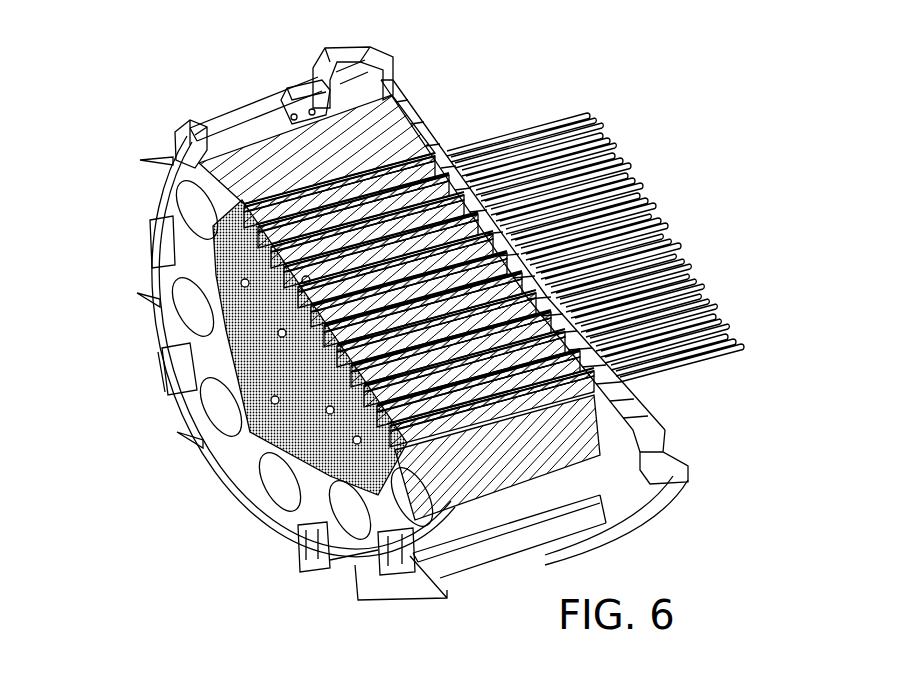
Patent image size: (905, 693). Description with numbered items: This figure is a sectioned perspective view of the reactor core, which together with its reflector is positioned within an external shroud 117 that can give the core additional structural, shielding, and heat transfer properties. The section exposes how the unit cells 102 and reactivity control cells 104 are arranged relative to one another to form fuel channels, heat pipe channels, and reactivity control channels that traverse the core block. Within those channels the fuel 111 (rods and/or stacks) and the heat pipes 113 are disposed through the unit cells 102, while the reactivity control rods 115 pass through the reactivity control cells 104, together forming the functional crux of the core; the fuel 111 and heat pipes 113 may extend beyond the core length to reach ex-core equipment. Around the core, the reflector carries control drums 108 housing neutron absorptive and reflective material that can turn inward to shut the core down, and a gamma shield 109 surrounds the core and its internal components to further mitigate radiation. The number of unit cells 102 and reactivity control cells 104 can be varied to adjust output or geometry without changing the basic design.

The unit cell 102 is at (437, 507).
The reactivity control cell 104 is at (232, 457).
The control drum 108 is at (214, 408).
The gamma shield 109 is at (278, 160).
The fuel 111 is at (601, 128).
The heat pipe 113 is at (742, 349).
The reactivity control rod 115 is at (505, 345).
The external shroud 117 is at (613, 500).